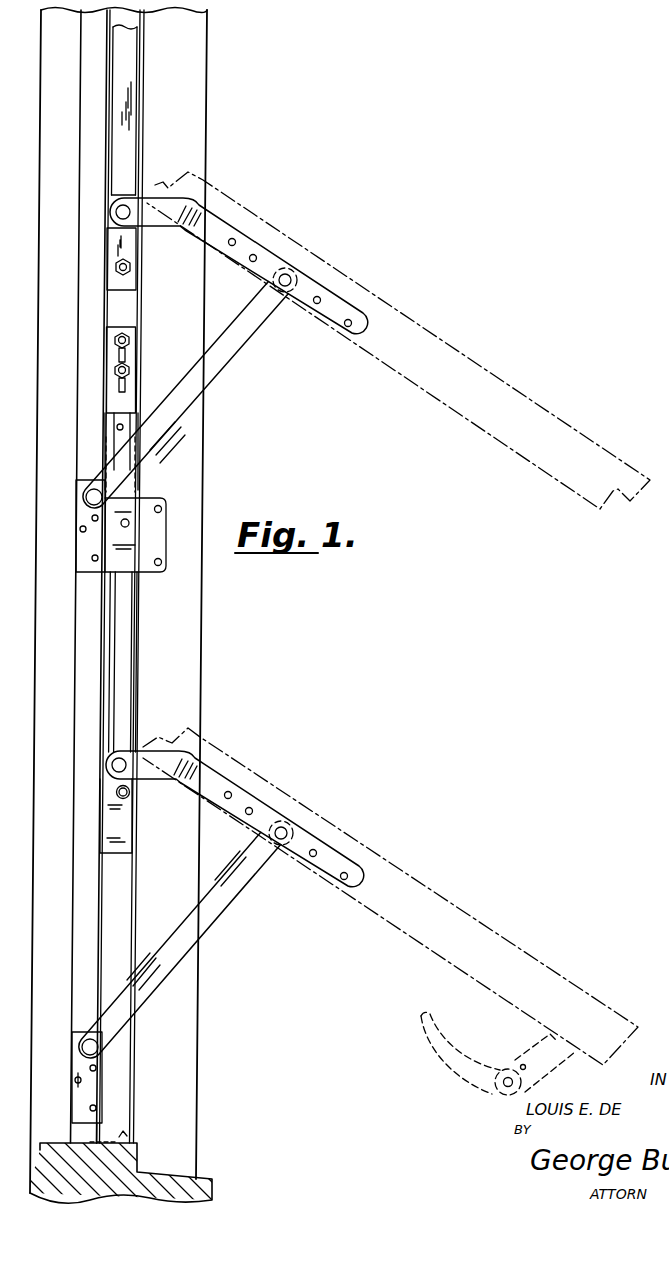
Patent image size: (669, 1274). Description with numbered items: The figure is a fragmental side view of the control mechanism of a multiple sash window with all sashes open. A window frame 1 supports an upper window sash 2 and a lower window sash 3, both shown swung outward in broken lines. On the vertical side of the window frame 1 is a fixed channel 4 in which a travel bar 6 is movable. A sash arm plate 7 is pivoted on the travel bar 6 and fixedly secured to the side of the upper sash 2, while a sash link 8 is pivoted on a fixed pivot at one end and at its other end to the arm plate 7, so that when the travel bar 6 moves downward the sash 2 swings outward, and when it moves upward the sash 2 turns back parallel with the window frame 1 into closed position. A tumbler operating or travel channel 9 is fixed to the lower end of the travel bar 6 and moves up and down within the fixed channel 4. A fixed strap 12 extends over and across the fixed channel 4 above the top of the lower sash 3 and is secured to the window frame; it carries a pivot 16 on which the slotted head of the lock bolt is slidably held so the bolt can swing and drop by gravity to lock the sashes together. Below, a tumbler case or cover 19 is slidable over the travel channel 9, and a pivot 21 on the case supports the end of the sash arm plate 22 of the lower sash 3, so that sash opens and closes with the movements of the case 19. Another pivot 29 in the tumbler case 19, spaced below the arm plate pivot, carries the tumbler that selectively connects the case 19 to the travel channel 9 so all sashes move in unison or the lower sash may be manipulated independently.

The window frame 1 is at (192, 97).
The upper window sash 2 is at (397, 308).
The lower window sash 3 is at (400, 868).
The fixed channel 4 is at (145, 22).
The travel bar 6 is at (127, 153).
The sash arm plate 7 is at (258, 268).
The sash link 8 is at (217, 360).
The travel channel 9 is at (130, 490).
The fixed strap 12 is at (144, 527).
The pivot 16 is at (128, 521).
The tumbler case 19 is at (125, 830).
The pivot 21 is at (111, 765).
The sash arm plate 22 is at (220, 782).
The tumbler pivot 29 is at (130, 793).